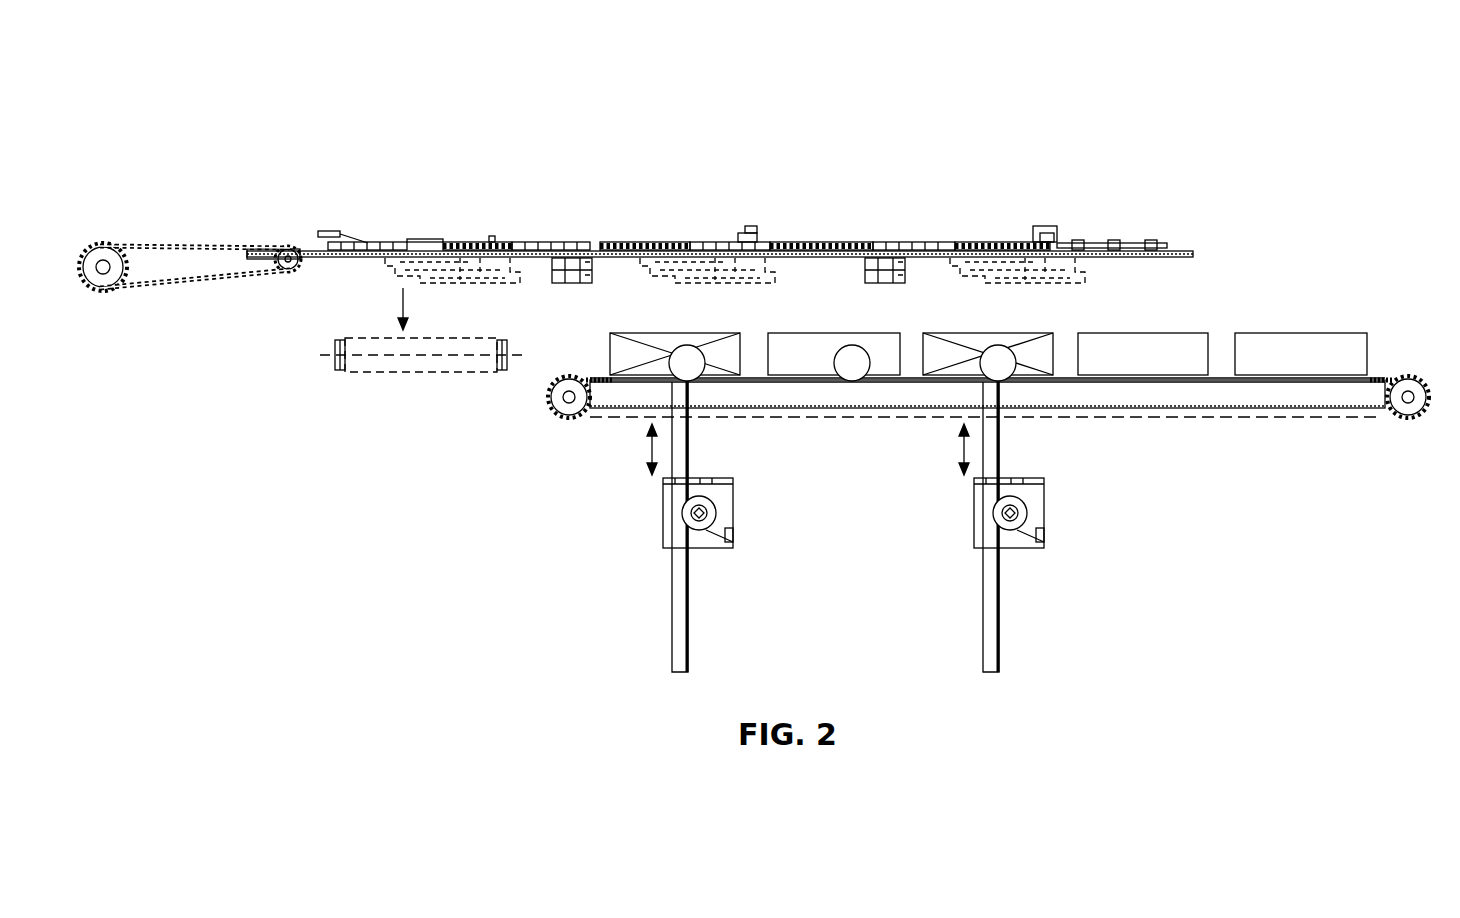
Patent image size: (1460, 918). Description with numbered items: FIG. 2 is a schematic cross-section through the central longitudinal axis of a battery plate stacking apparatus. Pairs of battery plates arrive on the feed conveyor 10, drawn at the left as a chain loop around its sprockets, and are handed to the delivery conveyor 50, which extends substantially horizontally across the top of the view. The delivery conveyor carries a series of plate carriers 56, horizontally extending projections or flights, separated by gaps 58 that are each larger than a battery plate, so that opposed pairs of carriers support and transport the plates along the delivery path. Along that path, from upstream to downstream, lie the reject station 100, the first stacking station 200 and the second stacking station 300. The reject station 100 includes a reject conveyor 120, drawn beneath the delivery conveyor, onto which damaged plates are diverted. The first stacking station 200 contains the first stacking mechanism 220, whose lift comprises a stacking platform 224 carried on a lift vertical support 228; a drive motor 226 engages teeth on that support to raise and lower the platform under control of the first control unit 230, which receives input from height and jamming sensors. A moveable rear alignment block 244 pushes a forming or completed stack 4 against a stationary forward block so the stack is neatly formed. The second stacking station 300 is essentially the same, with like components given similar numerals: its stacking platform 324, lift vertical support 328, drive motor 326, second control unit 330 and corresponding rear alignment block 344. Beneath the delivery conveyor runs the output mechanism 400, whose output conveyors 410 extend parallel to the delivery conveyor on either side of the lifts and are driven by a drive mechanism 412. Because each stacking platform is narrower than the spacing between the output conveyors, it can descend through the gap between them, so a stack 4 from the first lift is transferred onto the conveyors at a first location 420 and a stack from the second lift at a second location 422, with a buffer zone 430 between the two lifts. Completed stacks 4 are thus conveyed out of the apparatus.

The reject station 100 is at (259, 191).
The first stacking station 200 is at (549, 175).
The second stacking station 300 is at (862, 175).
The delivery conveyor 50 is at (1184, 206).
The plate carriers 56 is at (362, 242).
The gaps 58 is at (460, 242).
The feed conveyor 10 is at (158, 283).
The rear alignment block 244 is at (570, 285).
The bearing block 344 is at (880, 285).
The reject conveyor 120 is at (380, 357).
The stack 4 is at (646, 332).
The output mechanism 400 is at (1004, 390).
The output conveyor 410 is at (1340, 419).
The drive mechanism 412 is at (1412, 411).
The stacking platform 224 is at (622, 381).
The first location 420 is at (681, 372).
The buffer zone 430 is at (851, 381).
The second location 422 is at (993, 372).
The stacking platform 324 is at (1028, 381).
The first stacking mechanism 220 is at (661, 526).
The lift vertical support 228 is at (673, 612).
The first control unit 230 is at (722, 505).
The drive motor 226 is at (699, 519).
The lift vertical support 328 is at (984, 612).
The second control unit 330 is at (1033, 505).
The drive motor 326 is at (1010, 519).